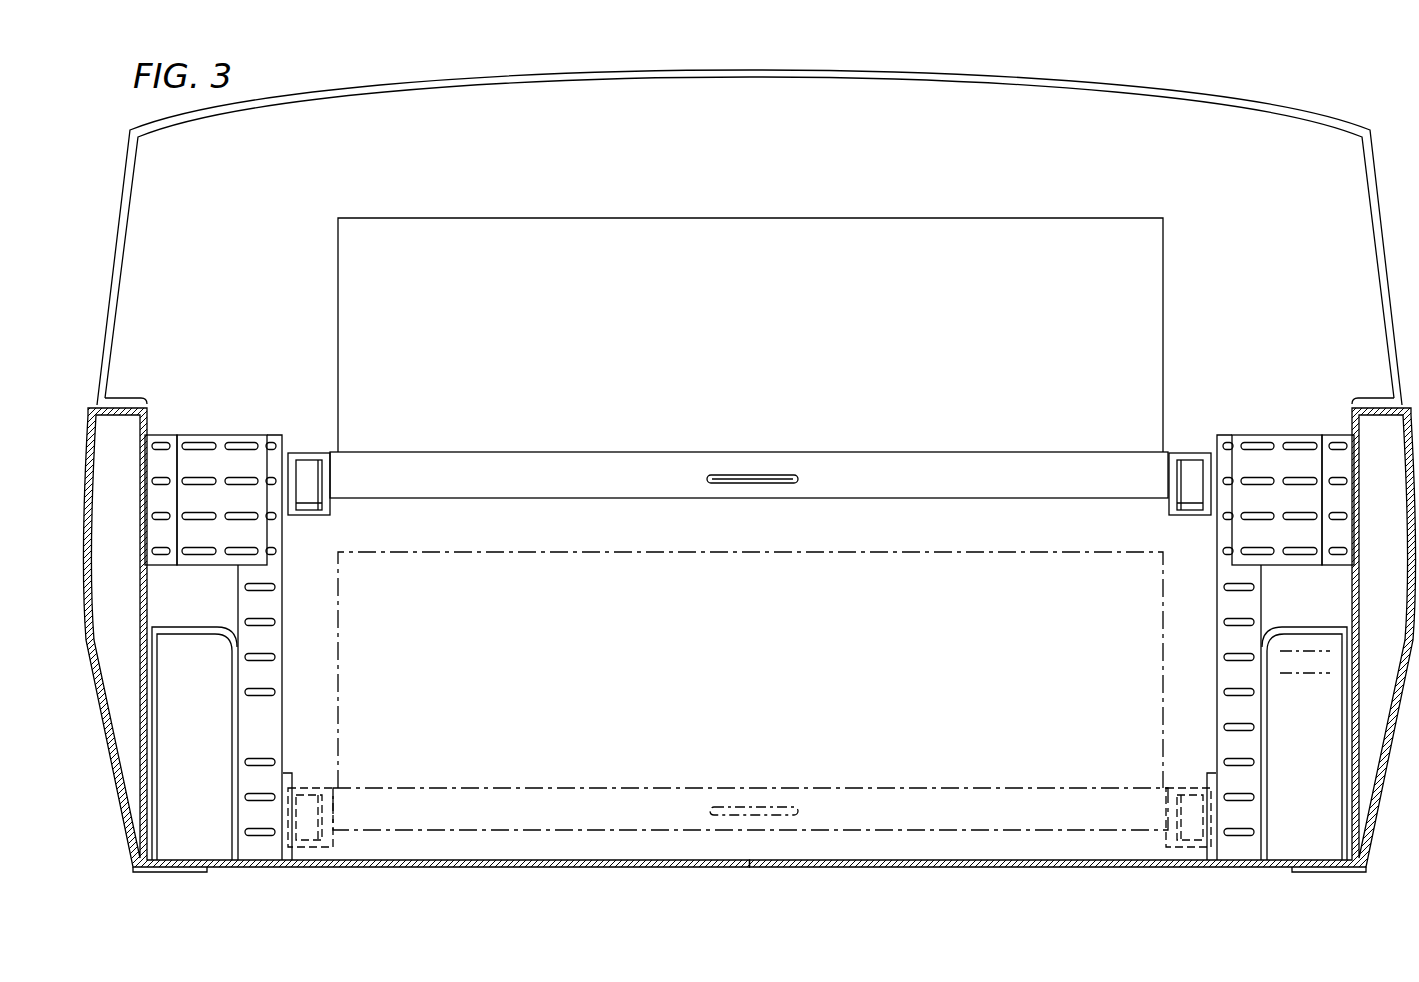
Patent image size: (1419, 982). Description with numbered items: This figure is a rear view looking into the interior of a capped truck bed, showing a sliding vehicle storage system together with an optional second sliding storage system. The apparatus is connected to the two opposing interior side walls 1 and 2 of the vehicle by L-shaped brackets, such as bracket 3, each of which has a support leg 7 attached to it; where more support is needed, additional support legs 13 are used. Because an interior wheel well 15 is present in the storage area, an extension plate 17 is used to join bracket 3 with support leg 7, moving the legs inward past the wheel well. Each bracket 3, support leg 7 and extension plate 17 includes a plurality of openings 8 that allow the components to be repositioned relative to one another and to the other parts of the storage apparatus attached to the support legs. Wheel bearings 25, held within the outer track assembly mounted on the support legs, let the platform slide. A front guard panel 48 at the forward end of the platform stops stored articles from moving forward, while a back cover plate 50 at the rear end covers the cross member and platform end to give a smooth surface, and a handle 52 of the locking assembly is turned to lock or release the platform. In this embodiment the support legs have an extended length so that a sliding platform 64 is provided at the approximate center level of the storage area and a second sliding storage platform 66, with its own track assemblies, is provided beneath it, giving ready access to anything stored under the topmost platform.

The interior side wall 1 is at (143, 578).
The interior side wall 2 is at (1358, 571).
The bracket 3 is at (157, 434).
The support leg 7 is at (270, 435).
The openings 8 is at (197, 556).
The support leg 13 is at (1338, 435).
The interior wheel well 15 is at (190, 642).
The extension plate 17 is at (222, 435).
The wheel bearings 25 is at (308, 463).
The front guard panel 48 is at (730, 344).
The back cover plate 50 is at (626, 468).
The handle 52 is at (778, 475).
The sliding platform at center level 64 is at (1196, 270).
The second storage platform 66 is at (1083, 546).